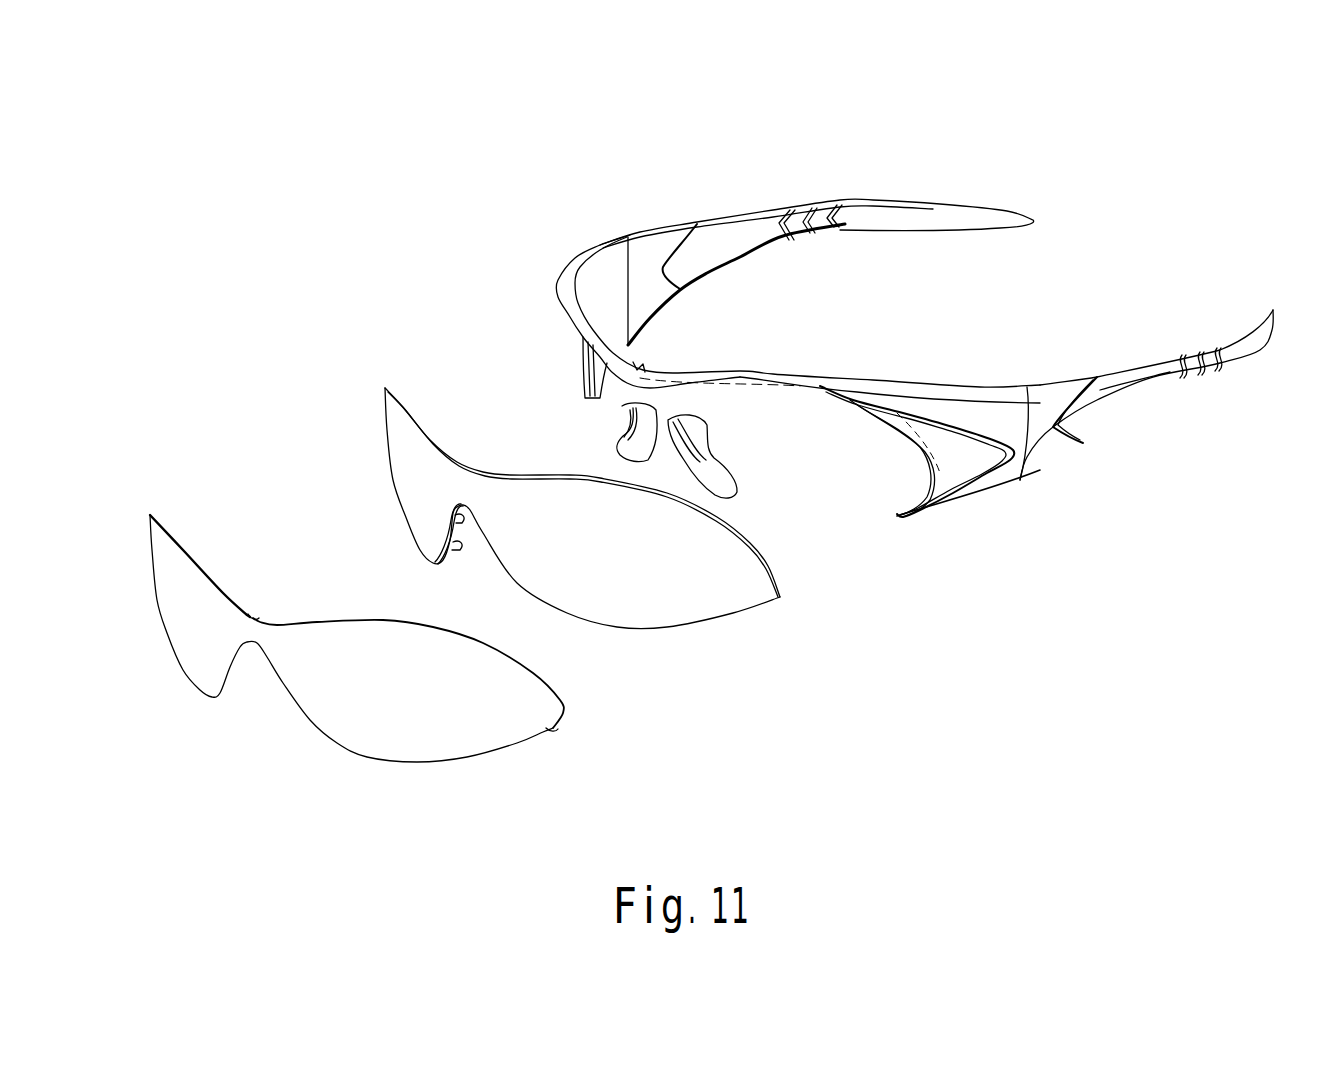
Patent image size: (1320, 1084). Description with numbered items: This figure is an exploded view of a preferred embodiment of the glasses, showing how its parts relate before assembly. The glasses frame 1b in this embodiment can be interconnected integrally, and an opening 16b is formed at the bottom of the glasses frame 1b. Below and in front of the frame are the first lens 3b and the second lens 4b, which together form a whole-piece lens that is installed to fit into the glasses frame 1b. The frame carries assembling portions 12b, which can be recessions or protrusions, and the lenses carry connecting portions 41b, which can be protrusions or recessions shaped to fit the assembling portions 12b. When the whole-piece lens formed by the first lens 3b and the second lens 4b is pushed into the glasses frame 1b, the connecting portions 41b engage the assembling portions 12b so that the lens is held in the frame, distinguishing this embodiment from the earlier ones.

The glasses frame 1b is at (567, 268).
The assembling portion 12b is at (585, 357).
The first lens 3b is at (395, 422).
The second lens 4b is at (320, 712).
The connecting portion 41b is at (253, 617).
The opening 16b is at (863, 500).